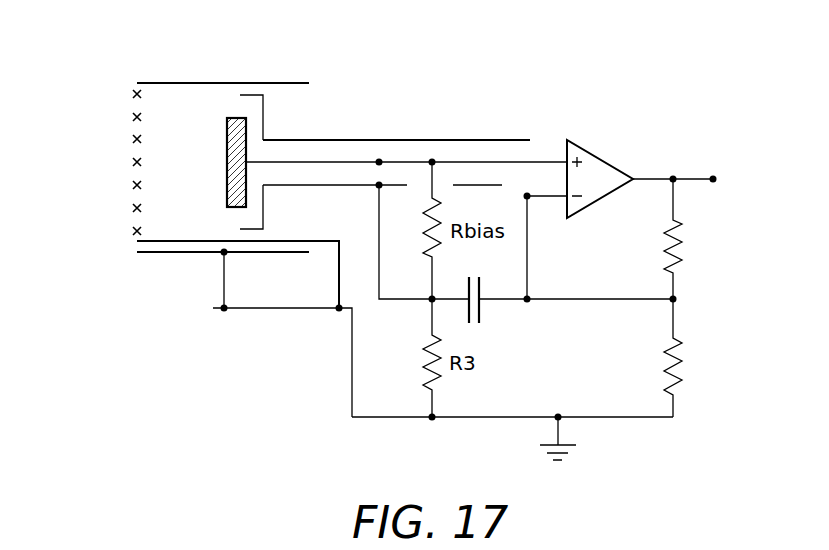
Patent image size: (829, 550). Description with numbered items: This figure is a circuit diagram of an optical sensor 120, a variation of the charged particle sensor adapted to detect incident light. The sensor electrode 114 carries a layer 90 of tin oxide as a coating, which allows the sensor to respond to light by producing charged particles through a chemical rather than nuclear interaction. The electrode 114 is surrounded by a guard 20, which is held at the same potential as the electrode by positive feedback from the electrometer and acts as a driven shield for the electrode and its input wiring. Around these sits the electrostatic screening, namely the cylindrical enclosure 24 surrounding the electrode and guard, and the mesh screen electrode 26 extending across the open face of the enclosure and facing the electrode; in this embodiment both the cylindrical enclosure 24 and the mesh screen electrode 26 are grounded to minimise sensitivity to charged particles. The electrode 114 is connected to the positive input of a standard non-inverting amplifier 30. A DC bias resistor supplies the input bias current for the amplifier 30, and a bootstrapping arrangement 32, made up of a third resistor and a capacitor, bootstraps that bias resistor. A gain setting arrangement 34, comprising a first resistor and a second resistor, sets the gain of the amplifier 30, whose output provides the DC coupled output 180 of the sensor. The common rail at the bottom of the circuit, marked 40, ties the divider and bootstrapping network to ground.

The optical sensor 120 is at (118, 58).
The mesh screen electrode 26 is at (134, 162).
The cylindrical enclosure 24 is at (161, 254).
The layer of tin oxide 90 is at (226, 129).
The sensor electrode 114 is at (264, 124).
The guard 20 is at (460, 138).
The bootstrapping arrangement 32 is at (484, 339).
The non-inverting amplifier 30 is at (596, 144).
The output 180 is at (714, 182).
The gain setting arrangement 34 is at (704, 312).
The common ground rail 40 is at (375, 419).